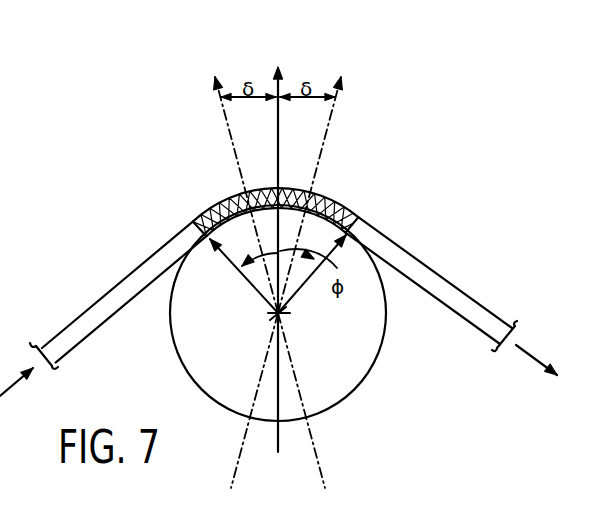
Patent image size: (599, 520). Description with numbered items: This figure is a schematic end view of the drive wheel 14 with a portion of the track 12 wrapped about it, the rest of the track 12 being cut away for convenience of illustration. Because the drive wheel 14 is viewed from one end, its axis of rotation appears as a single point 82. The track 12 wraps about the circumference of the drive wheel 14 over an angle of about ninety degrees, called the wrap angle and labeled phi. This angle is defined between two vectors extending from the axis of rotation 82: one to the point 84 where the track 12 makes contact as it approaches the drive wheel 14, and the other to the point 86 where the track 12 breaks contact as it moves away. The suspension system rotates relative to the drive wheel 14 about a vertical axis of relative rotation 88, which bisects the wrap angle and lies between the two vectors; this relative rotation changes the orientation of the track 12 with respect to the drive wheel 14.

The track 12 is at (433, 270).
The drive wheel 14 is at (357, 390).
The axis of rotation 82 is at (278, 313).
The point of track contact 84 is at (193, 212).
The point of track break-contact 86 is at (372, 216).
The axis of relative rotation 88 is at (279, 79).